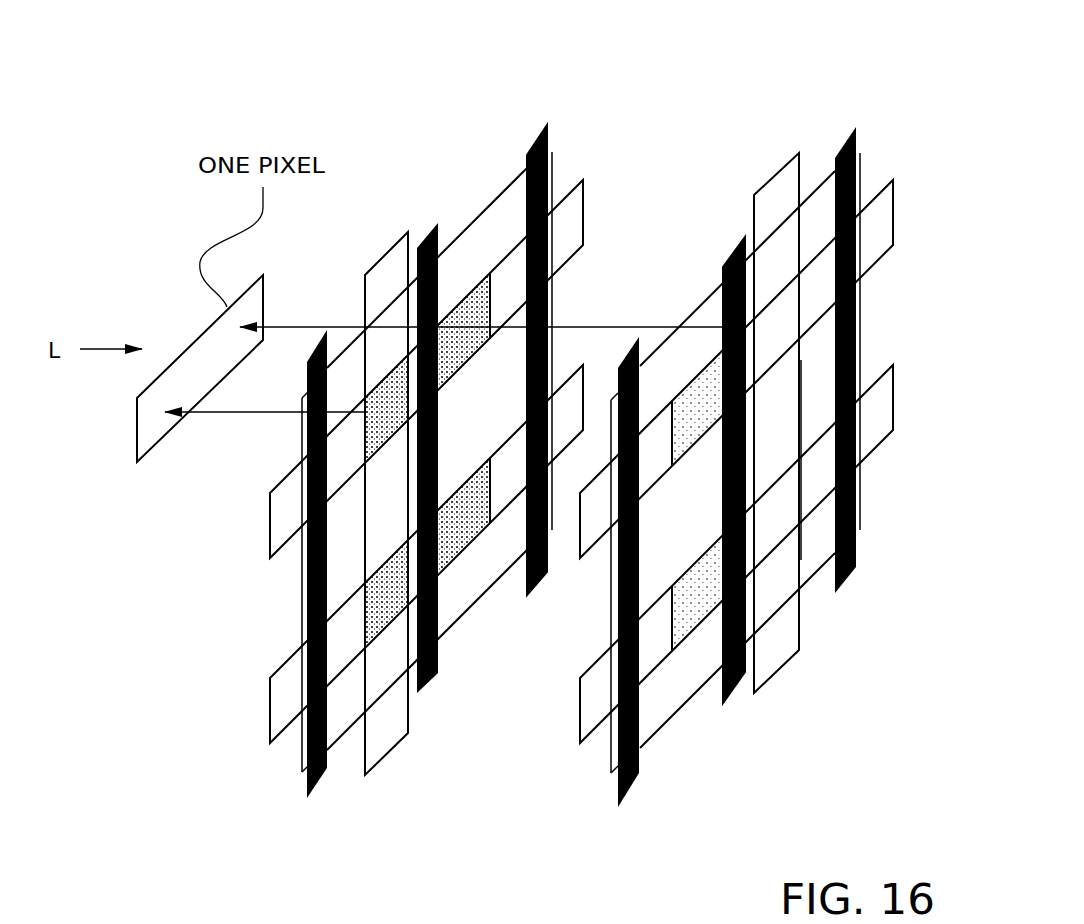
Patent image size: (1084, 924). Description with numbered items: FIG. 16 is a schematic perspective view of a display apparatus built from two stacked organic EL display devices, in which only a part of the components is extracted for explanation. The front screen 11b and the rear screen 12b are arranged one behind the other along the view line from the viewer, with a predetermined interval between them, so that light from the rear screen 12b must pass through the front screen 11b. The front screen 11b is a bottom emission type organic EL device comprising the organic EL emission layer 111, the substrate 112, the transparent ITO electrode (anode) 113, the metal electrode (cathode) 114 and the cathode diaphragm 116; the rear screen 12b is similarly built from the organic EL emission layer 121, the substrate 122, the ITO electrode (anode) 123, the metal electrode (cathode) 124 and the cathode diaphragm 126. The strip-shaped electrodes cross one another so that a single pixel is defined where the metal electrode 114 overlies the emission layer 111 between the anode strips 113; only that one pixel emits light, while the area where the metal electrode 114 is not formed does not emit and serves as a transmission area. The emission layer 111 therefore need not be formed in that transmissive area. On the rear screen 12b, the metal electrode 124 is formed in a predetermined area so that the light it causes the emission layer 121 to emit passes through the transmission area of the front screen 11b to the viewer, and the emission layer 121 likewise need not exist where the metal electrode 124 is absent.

The front screen 11b is at (403, 92).
The rear screen 12b is at (718, 92).
The organic EL emission layer 111 is at (465, 350).
The substrate 112 is at (489, 577).
The ITO electrode (anode) 113 is at (270, 528).
The metal electrode (cathode) 114 is at (392, 735).
The cathode diaphragm 116 is at (327, 770).
The organic EL emission layer 121 is at (690, 432).
The substrate 122 is at (710, 660).
The ITO electrode (anode) 123 is at (878, 242).
The metal electrode (cathode) 124 is at (783, 667).
The cathode diaphragm 126 is at (848, 583).